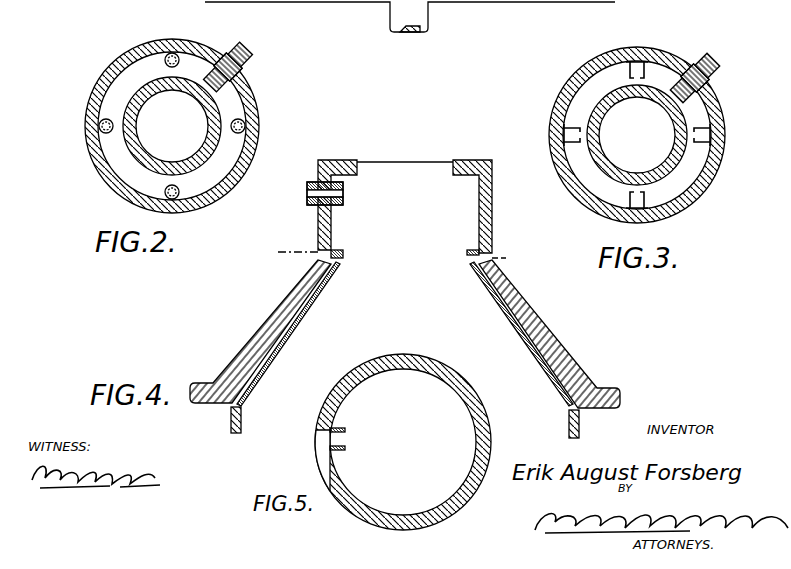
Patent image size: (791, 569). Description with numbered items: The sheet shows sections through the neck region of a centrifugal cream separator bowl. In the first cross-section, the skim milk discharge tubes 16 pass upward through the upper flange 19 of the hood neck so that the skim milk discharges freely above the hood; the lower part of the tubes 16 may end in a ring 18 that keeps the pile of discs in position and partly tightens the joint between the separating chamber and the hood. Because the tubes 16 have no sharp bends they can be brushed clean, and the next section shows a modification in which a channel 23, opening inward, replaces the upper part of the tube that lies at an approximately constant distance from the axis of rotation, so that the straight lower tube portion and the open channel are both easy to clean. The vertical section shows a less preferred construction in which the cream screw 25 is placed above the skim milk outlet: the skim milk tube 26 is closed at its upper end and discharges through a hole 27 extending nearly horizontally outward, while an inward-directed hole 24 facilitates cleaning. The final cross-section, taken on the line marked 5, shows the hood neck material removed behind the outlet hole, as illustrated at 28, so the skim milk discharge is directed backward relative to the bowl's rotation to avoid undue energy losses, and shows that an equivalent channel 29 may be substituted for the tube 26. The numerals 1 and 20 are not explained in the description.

In FIG. 2, the casing body 1 is at (82, 126).
In FIG. 2, the tube 16 is at (100, 113).
In FIG. 2, the key 20 is at (252, 62).
In FIG. 3, the key 20 is at (716, 68).
In FIG. 3, the channel 23 is at (553, 108).
In FIG. 4, the upper flange 19 is at (337, 160).
In FIG. 4, the cream screw 25 is at (307, 198).
In FIG. 4, the section line 5 is at (272, 250).
In FIG. 4, the hole 27 is at (318, 260).
In FIG. 4, the hole 24 is at (345, 257).
In FIG. 4, the skim milk tube 26 is at (297, 322).
In FIG. 4, the ring 18 is at (243, 422).
In FIG. 5, the removed hood neck material 28 is at (322, 452).
In FIG. 5, the channel 29 is at (348, 448).